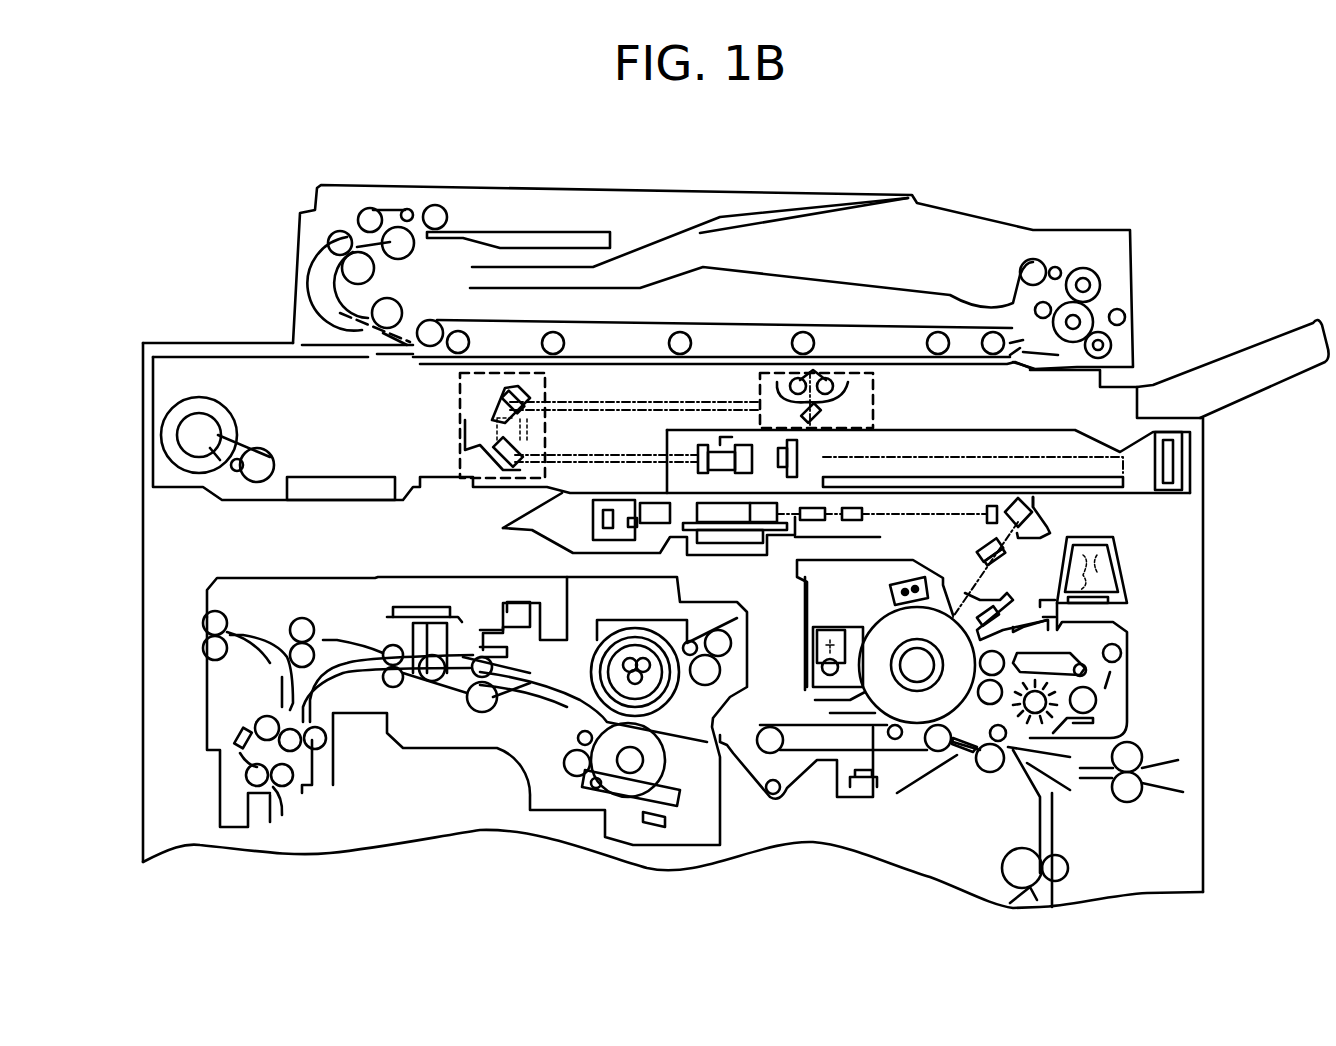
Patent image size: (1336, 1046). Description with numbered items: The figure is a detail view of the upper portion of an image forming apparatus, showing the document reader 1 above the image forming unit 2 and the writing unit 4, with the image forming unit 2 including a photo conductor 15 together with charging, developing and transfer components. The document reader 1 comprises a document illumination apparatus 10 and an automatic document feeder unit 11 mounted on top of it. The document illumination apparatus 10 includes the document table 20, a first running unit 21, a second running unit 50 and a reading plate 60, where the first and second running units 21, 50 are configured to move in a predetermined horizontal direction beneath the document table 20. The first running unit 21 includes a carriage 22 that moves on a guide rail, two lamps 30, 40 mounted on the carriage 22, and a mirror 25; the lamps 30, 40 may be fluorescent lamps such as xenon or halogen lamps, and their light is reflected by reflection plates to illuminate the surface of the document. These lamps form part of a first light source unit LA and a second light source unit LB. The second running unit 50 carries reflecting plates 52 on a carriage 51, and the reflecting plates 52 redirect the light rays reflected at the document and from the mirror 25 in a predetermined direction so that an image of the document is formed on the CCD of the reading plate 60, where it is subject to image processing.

The document reader 1 is at (105, 402).
The image forming unit 2 is at (1150, 694).
The writing unit 4 is at (1065, 508).
The document illumination apparatus 10 is at (347, 398).
The automatic document feeder (ADF) unit 11 is at (736, 171).
The photo conductor 15 is at (915, 722).
The document table 20 is at (885, 357).
The first running unit 21 is at (782, 349).
The carriage 22 is at (760, 393).
The mirror 25 is at (818, 417).
The lamp 30 is at (850, 383).
The lamp 40 is at (782, 386).
The second running unit 50 is at (440, 446).
The carriage 51 is at (467, 417).
The reflecting plates 52 is at (492, 395).
The reading plate 60 is at (779, 472).
The first light source unit LA is at (831, 349).
The second light source unit LB is at (762, 349).